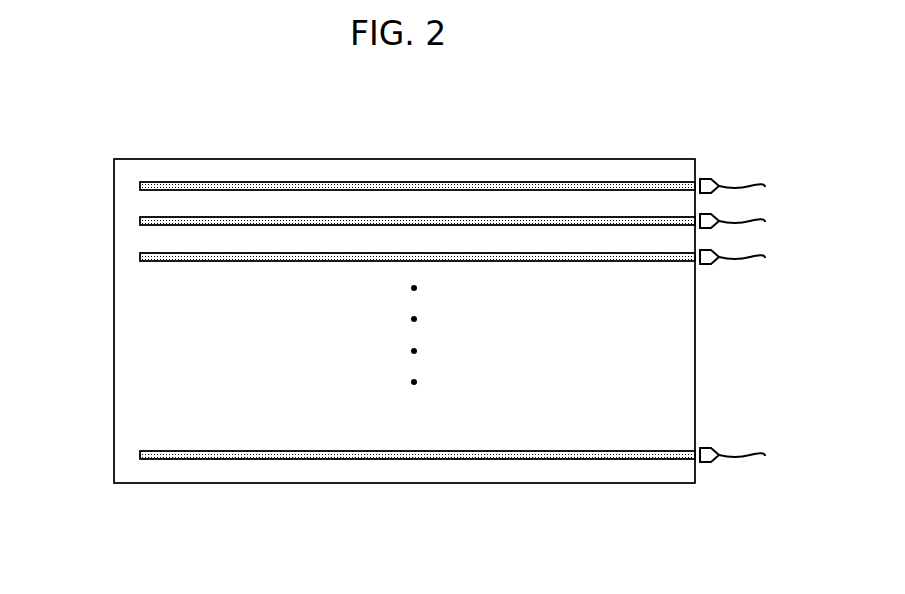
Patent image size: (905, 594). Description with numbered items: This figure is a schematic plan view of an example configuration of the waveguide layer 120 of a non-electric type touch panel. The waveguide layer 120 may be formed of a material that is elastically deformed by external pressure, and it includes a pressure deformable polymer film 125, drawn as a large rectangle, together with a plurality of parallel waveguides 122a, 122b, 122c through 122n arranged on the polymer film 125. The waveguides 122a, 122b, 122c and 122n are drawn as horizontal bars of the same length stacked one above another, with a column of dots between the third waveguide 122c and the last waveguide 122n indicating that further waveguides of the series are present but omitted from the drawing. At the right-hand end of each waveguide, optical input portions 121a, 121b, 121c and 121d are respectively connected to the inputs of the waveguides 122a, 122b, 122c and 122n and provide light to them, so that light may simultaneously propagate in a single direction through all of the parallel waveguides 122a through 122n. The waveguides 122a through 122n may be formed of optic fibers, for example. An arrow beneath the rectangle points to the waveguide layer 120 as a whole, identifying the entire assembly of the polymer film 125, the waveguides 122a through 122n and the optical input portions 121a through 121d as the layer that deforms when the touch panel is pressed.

The waveguide layer 120 is at (418, 506).
The pressure deformable polymer film 125 is at (125, 360).
The waveguide 122a is at (140, 186).
The waveguide 122b is at (140, 221).
The waveguide 122c is at (140, 257).
The waveguide 122n is at (140, 455).
The optical input portion 121a is at (722, 182).
The optical input portion 121b is at (722, 217).
The optical input portion 121c is at (722, 253).
The optical input portion 121d is at (722, 451).